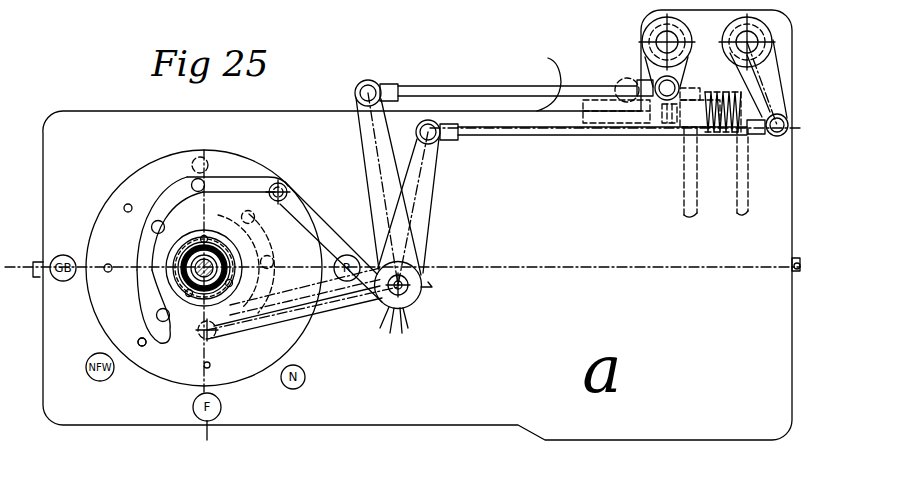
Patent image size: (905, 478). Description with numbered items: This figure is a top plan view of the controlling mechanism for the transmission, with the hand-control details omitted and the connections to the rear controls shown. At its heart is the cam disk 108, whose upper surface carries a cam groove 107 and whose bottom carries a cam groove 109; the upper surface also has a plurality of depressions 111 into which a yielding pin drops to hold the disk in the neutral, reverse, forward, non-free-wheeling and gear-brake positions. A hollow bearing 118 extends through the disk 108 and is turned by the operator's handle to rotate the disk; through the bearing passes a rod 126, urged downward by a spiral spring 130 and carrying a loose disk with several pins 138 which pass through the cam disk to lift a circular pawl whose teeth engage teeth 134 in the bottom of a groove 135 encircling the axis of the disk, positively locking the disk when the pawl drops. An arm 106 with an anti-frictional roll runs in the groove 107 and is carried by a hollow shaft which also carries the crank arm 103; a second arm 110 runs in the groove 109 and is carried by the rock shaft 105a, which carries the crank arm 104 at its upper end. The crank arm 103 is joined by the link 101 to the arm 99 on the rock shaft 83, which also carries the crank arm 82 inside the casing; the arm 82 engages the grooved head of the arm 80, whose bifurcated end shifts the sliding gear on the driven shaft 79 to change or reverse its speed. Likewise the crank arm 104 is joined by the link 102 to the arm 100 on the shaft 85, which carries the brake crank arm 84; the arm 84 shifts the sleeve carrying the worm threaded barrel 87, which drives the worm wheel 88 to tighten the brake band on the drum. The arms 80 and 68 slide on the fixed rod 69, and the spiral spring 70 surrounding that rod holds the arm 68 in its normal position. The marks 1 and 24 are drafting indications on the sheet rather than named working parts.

The machine frame 1 is at (43, 262).
The section line 24 is at (28, 297).
The arm 68 is at (682, 212).
The fixed rod 69 is at (610, 112).
The spiral spring 70 is at (718, 134).
The driven shaft 79 is at (795, 271).
The arm 80 is at (746, 208).
The crank arm 82 is at (742, 104).
The rock shaft 83 is at (754, 33).
The crank arm 84 is at (697, 62).
The shaft 85 is at (648, 72).
The worm threaded barrel 87 is at (672, 120).
The worm wheel 88 is at (625, 82).
The arm 99 is at (768, 134).
The arm 100 is at (627, 74).
The link 101 is at (490, 132).
The link 102 is at (440, 92).
The crank arm 103 is at (424, 208).
The crank arm 104 is at (365, 140).
The rock shaft 105a is at (420, 307).
The arm 106 is at (333, 229).
The cam groove 107 is at (182, 182).
The cam disk 108 is at (122, 189).
The cam groove 109 is at (232, 177).
The arm 110 is at (332, 315).
The depressions 111 is at (138, 333).
The hollow bearing 118 is at (231, 255).
The rod 126 is at (217, 334).
The spiral spring 130 is at (187, 252).
The teeth 134 is at (208, 228).
The groove 135 is at (192, 303).
The pins 138 is at (203, 235).